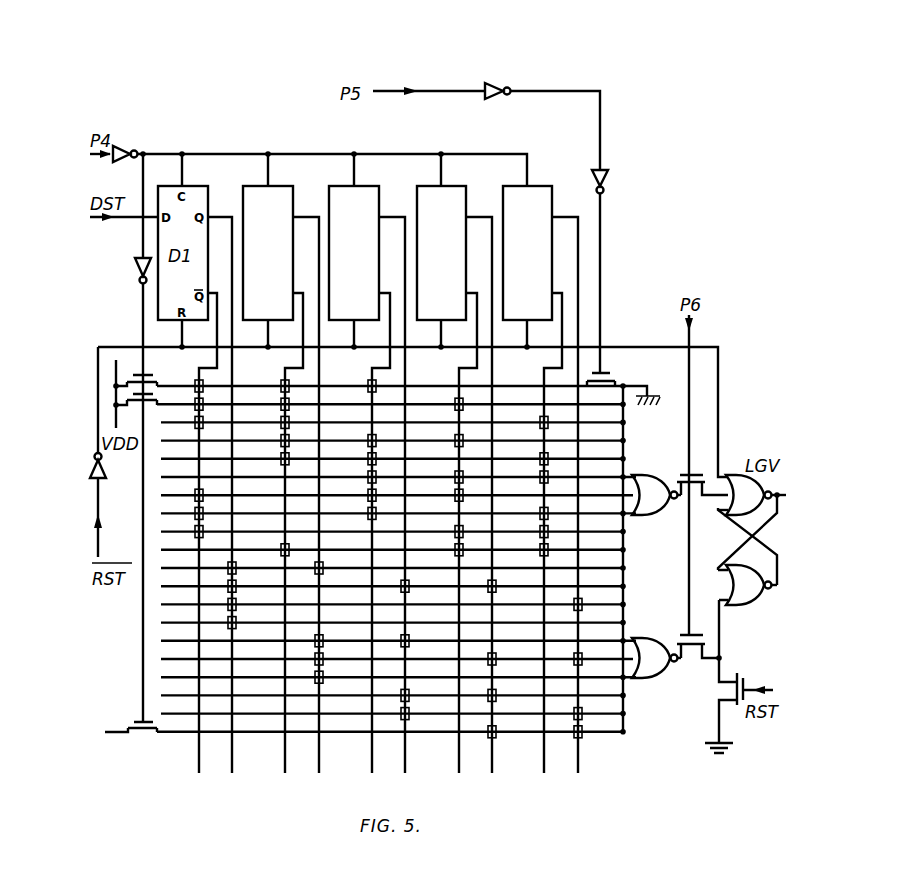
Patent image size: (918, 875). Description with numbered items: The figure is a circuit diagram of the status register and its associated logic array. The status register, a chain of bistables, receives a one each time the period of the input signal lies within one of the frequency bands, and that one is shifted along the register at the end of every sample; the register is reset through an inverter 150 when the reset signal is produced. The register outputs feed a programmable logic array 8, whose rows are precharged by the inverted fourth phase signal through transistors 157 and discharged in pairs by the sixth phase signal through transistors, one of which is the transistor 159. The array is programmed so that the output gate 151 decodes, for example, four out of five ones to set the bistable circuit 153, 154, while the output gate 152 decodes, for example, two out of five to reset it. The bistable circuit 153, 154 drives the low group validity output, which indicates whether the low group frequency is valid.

The programmable logic array 8 is at (134, 654).
The inverter 150 is at (107, 470).
The output gate 151 is at (648, 480).
The output gate 152 is at (650, 638).
The bistable circuit 153 is at (742, 471).
The bistable circuit 154 is at (744, 605).
The transistors 157 is at (129, 365).
The transistor 159 is at (612, 370).